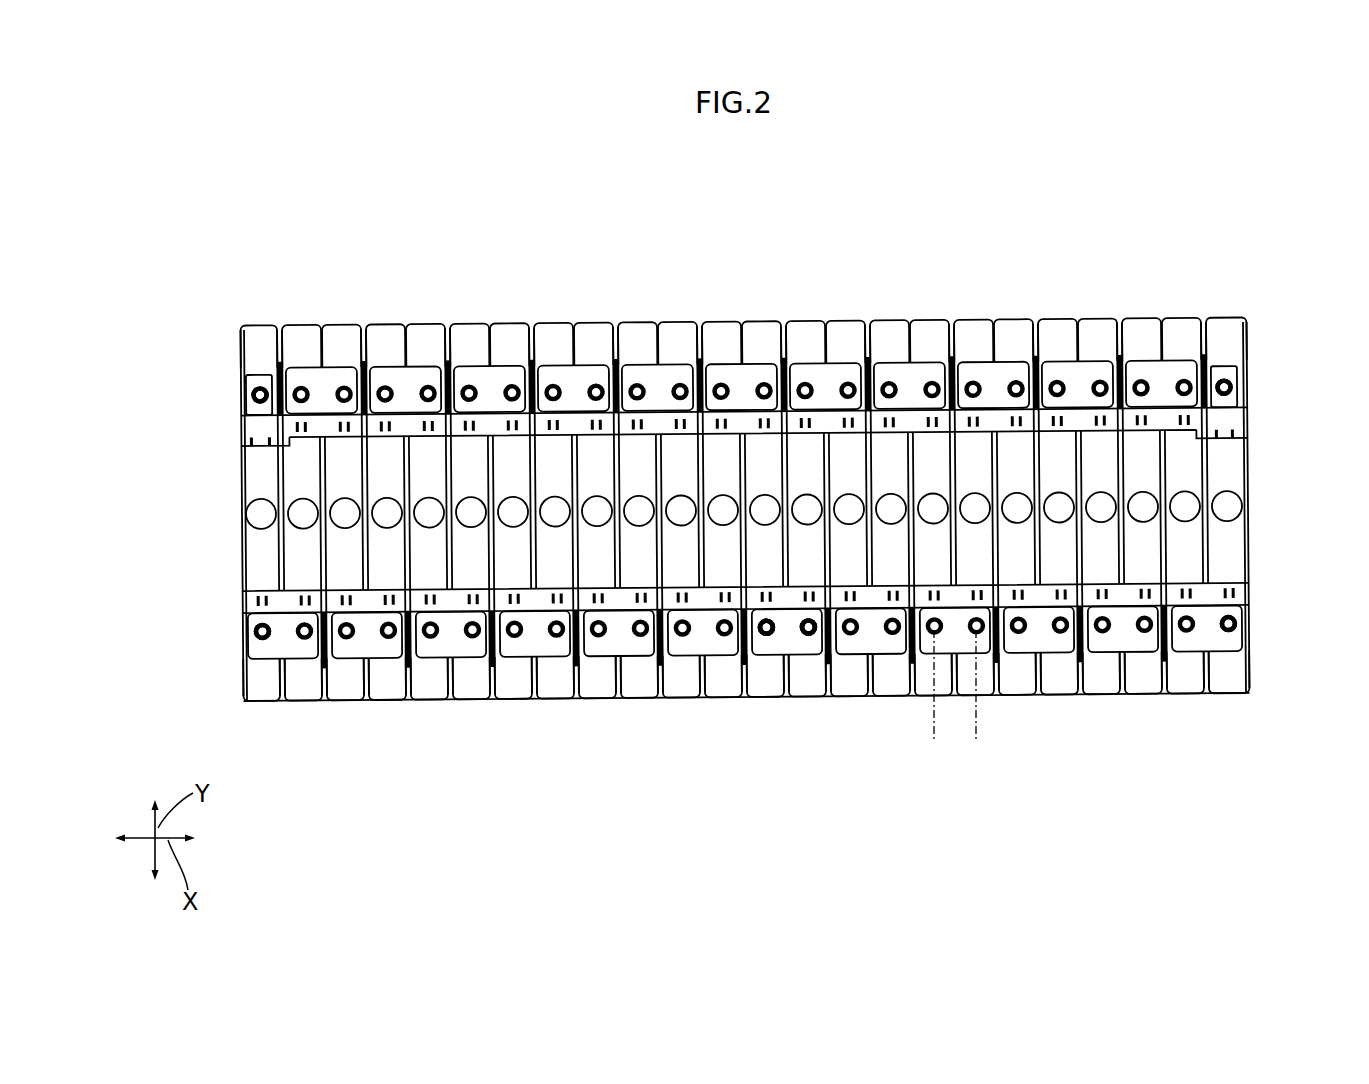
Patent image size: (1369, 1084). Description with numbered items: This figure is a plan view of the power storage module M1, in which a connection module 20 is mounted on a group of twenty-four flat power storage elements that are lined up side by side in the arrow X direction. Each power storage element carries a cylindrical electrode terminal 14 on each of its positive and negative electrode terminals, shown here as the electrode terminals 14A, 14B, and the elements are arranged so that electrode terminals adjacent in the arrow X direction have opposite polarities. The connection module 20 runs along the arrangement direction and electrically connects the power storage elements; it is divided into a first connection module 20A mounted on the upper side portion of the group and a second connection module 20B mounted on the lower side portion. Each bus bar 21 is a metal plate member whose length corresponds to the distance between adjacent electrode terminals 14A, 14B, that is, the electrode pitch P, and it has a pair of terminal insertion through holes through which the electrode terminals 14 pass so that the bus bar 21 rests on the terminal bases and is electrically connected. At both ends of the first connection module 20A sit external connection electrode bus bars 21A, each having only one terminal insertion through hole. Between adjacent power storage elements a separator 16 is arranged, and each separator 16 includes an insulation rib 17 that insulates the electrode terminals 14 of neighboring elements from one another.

The battery module M1 is at (766, 214).
The connection module 20 is at (148, 383).
The first connection module 20A is at (233, 402).
The second connection module 20B is at (233, 633).
The bus bar 21 is at (561, 358).
The external connection electrode bus bar 21A is at (270, 366).
The electrode terminal 14 is at (838, 745).
The electrode terminal (positive) 14A is at (1234, 388).
The electrode terminal (negative) 14B is at (257, 386).
The separator 16 is at (451, 703).
The insulation rib 17 is at (488, 660).
The electrode pitch P is at (997, 722).